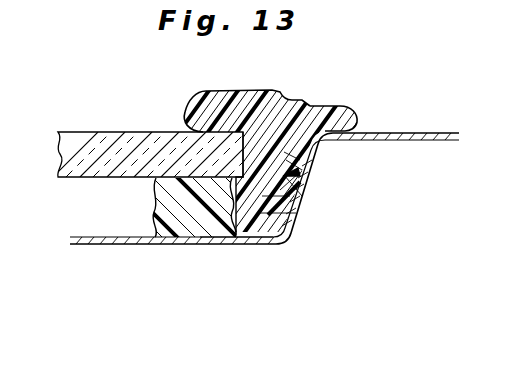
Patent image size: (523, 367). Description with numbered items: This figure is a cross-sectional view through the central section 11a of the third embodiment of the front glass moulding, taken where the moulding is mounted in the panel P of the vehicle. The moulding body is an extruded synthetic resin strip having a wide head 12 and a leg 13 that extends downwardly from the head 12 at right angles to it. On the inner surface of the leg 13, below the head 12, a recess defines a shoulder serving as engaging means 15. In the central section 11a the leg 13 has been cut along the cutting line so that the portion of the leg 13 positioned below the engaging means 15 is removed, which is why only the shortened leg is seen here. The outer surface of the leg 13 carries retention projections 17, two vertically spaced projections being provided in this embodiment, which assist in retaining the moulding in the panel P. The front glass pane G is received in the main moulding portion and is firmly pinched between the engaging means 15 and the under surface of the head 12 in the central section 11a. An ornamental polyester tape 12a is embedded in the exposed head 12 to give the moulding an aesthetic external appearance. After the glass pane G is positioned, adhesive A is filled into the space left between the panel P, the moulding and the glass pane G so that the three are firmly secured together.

The central section 11a is at (242, 91).
The head 12 is at (206, 93).
The ornamental polyester tape 12a is at (288, 91).
The leg 13 is at (288, 197).
The engaging means 15 is at (238, 237).
The retention projection 17 is at (302, 165).
The front glass pane G is at (110, 131).
The panel P is at (382, 133).
The adhesive A is at (163, 232).